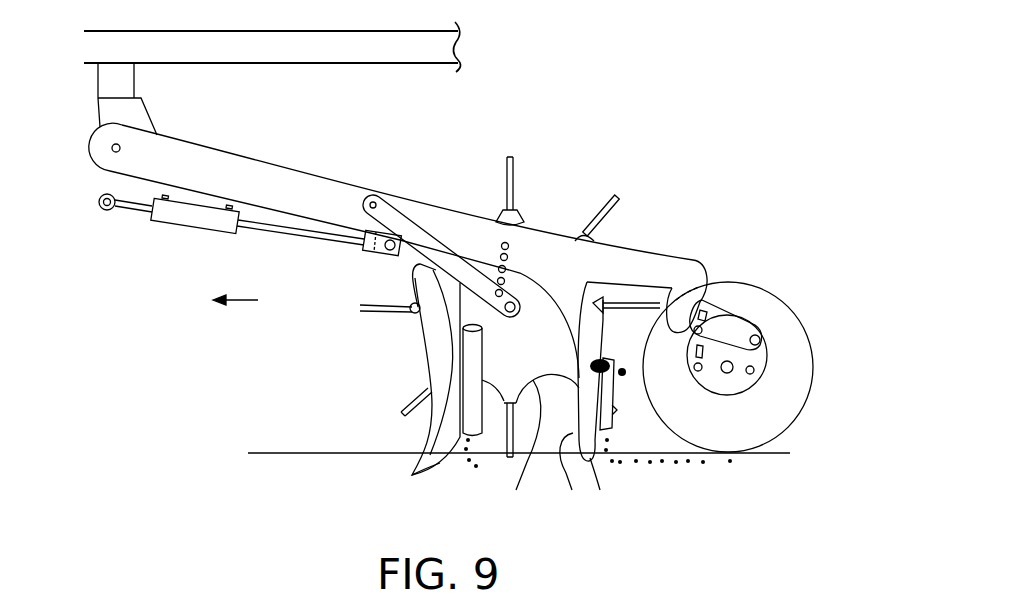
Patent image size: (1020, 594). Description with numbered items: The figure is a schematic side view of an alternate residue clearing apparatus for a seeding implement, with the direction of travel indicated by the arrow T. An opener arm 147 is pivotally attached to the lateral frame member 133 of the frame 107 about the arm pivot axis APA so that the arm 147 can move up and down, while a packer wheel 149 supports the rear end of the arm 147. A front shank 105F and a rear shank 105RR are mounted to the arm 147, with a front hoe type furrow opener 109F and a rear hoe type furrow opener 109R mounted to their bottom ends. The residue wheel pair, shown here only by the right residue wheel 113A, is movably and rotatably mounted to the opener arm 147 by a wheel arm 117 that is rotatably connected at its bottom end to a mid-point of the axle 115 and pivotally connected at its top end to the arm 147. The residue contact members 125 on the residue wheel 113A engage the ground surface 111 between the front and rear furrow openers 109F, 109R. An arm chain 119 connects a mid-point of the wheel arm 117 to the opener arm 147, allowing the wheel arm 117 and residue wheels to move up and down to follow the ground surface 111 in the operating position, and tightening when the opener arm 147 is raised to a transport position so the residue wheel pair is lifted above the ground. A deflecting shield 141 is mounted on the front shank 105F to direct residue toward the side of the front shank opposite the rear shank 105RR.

The frame 107 is at (267, 64).
The lateral frame member 133 is at (97, 80).
The opener arm 147 is at (293, 167).
The arm pivot axis APA is at (120, 146).
The wheel arm 117 is at (432, 237).
The axle 115 is at (508, 318).
The residue contact members 125 is at (515, 172).
The arm chain 119 is at (527, 258).
The front shank 105F is at (420, 440).
The front hoe type furrow opener 109F is at (433, 474).
The right residue wheel 113A is at (527, 442).
The deflecting shield 141 is at (420, 343).
The rear shank 105RR is at (558, 453).
The rear hoe type furrow opener 109R is at (580, 465).
The ground surface 111 is at (310, 452).
The packer wheel 149 is at (763, 288).
The direction of travel T is at (226, 299).